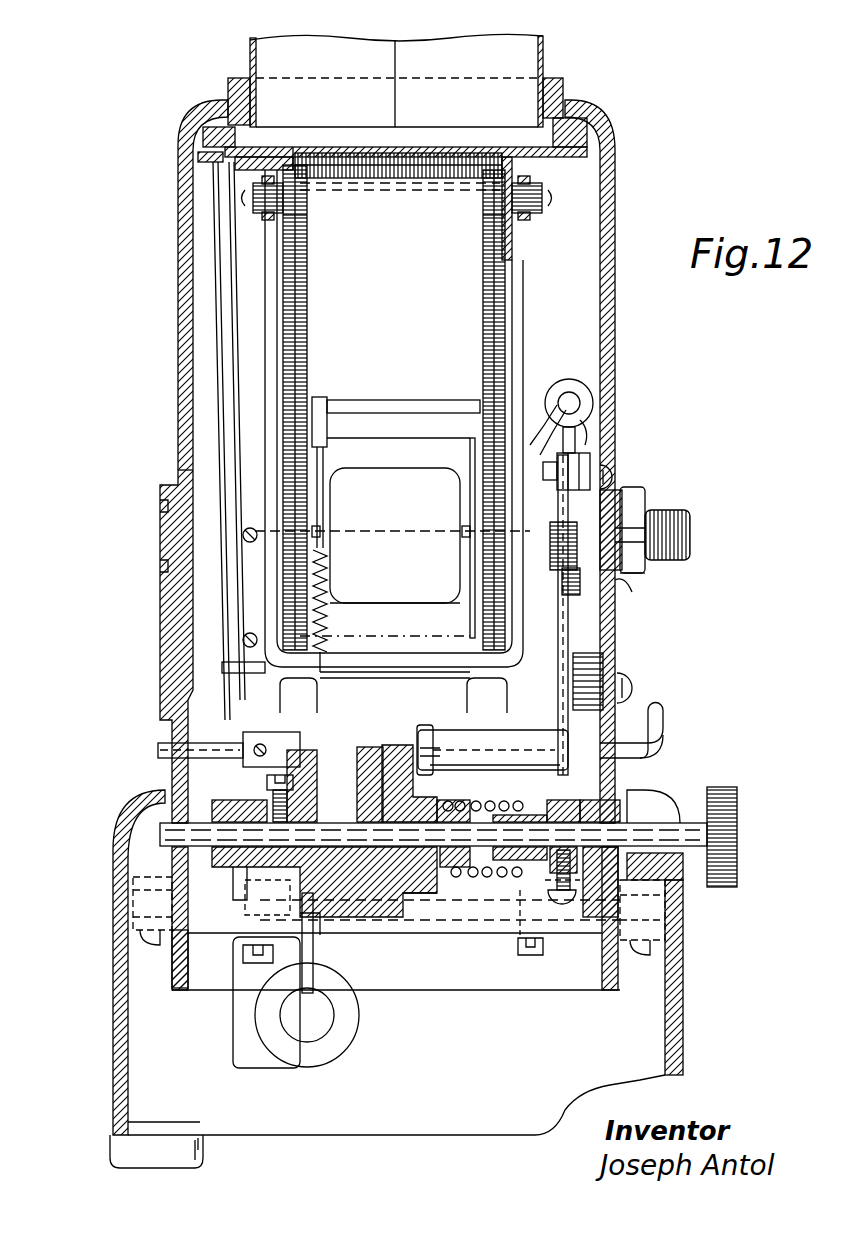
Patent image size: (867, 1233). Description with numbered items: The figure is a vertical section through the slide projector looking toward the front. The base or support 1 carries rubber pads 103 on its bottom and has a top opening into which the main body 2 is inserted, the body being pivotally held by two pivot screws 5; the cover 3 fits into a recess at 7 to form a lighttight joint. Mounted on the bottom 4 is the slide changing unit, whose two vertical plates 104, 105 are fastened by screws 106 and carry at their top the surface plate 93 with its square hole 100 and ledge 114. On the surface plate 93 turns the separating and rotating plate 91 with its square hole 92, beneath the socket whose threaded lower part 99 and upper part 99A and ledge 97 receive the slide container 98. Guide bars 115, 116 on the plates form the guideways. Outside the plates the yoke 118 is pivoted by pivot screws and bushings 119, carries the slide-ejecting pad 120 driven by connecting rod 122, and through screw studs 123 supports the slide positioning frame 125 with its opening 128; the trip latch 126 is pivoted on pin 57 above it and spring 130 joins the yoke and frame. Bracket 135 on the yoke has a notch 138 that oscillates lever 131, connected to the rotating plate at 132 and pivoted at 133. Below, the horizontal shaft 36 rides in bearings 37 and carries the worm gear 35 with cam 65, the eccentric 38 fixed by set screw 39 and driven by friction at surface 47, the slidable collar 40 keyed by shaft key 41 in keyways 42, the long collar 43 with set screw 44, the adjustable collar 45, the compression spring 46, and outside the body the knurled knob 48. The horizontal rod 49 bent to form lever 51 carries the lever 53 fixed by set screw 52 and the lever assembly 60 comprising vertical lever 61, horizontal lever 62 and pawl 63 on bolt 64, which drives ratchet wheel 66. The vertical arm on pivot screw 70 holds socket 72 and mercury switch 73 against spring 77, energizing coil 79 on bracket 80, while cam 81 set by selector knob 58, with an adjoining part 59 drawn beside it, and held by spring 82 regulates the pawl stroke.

The base or support 1 is at (117, 990).
The main body 2 is at (160, 530).
The cover 3 is at (178, 272).
The bottom 4 is at (503, 930).
The pivot screws 5 is at (135, 888).
The recess 7 is at (178, 462).
The worm gear 35 is at (468, 873).
The horizontal shaft 36 is at (688, 823).
The bearings 37 is at (602, 820).
The eccentric 38 is at (385, 920).
The set screw 39 is at (268, 785).
The slidable collar 40 is at (510, 875).
The shaft key 41 is at (482, 803).
The keyways 42 is at (452, 803).
The long collar 43 is at (573, 786).
The set screw 44 is at (580, 890).
The adjustable threaded collar 45 is at (560, 930).
The compression spring 46 is at (545, 930).
The friction surface 47 is at (372, 760).
The knurled knob 48 is at (737, 822).
The horizontal rod 49 is at (210, 740).
The lever 51 is at (665, 730).
The set screw 52 is at (262, 746).
The lever 53 is at (322, 1024).
The pin or stud 57 is at (410, 402).
The selector knob 58 is at (690, 538).
The flange 59 is at (640, 572).
The lever assembly 60 is at (487, 743).
The vertical lever 61 is at (562, 650).
The horizontal lever 62 is at (420, 755).
The pawl 63 is at (590, 443).
The bolt 64 is at (612, 465).
The cam 65 is at (487, 880).
The ratchet wheel 66 is at (575, 595).
The pivot screw 70 is at (625, 685).
The socket 72 is at (593, 402).
The mercury switch 73 is at (575, 395).
The spring 77 is at (587, 660).
The coil 79 is at (318, 1064).
The bracket 80 is at (255, 1066).
The cam 81 is at (553, 572).
The spring 82 is at (625, 588).
The separating and rotating plate 91 is at (293, 150).
The square hole 92 is at (302, 147).
The surface plate 93 is at (588, 162).
The ledge 97 is at (262, 135).
The slide container 98 is at (250, 60).
The lower part of socket 99 is at (588, 140).
The upper part of socket 99A is at (228, 88).
The square hole 100 is at (430, 165).
The rubber pads 103 is at (203, 1150).
The vertical plate 104 is at (302, 218).
The vertical plate 105 is at (487, 218).
The screws 106 is at (260, 965).
The ledge 114 is at (372, 175).
The guide bar 115 is at (307, 310).
The guide bar 116 is at (483, 302).
The yoke 118 is at (267, 340).
The pivot screws and bushings 119 is at (245, 200).
The slide-ejecting pad 120 is at (433, 713).
The connecting rod 122 is at (347, 935).
The screw studs 123 is at (462, 530).
The slide positioning frame 125 is at (360, 460).
The trip latch 126 is at (320, 397).
The opening 128 is at (430, 603).
The spring 130 is at (326, 610).
The lever 131 is at (218, 385).
The connection point 132 is at (205, 162).
The pivot 133 is at (233, 932).
The bracket 135 is at (260, 588).
The notch 138 is at (225, 665).